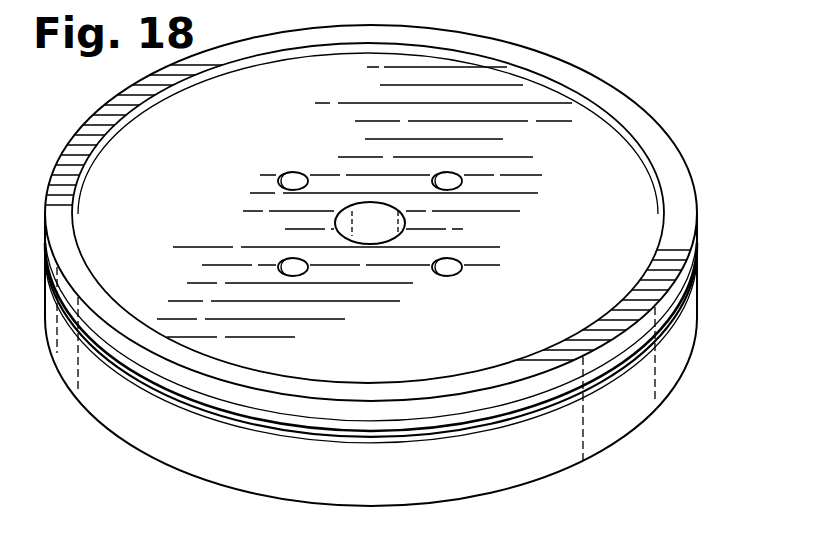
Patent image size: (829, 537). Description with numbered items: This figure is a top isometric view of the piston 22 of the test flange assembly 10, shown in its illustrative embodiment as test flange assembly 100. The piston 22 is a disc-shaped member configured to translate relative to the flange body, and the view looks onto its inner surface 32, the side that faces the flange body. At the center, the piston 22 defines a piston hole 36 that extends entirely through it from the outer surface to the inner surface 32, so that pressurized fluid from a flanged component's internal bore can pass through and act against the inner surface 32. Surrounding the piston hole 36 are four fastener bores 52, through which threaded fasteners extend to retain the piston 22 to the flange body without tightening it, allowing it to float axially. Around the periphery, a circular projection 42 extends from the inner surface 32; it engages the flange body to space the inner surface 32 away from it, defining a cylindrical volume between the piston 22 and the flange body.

The test flange assembly 10 is at (726, 42).
The test flange assembly 100 is at (680, 77).
The piston 22 is at (685, 107).
The projection 42 is at (560, 73).
The piston hole 36 is at (366, 218).
The fastener bores 52 is at (293, 262).
The inner surface 32 is at (465, 347).